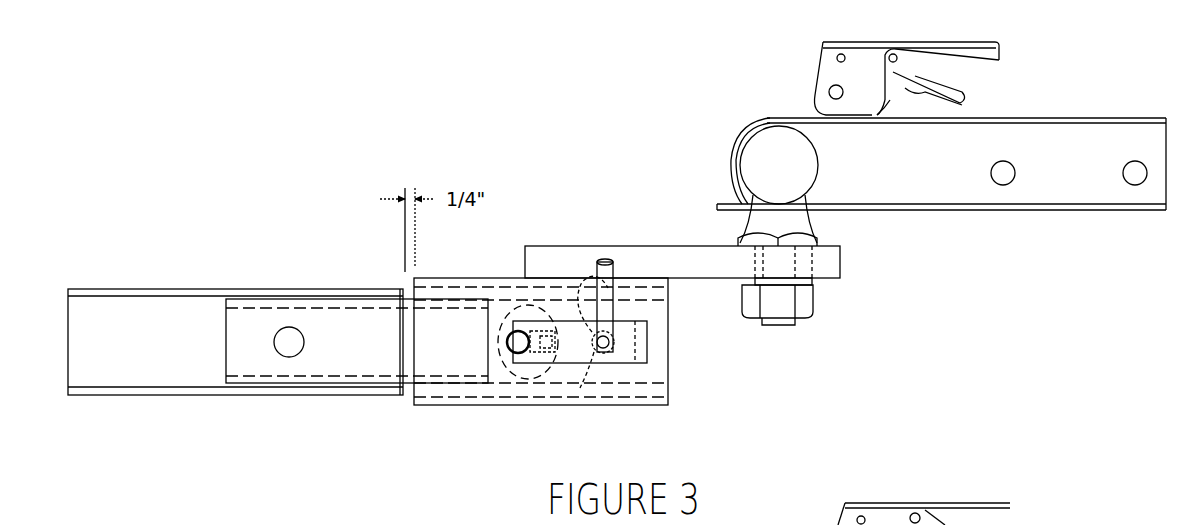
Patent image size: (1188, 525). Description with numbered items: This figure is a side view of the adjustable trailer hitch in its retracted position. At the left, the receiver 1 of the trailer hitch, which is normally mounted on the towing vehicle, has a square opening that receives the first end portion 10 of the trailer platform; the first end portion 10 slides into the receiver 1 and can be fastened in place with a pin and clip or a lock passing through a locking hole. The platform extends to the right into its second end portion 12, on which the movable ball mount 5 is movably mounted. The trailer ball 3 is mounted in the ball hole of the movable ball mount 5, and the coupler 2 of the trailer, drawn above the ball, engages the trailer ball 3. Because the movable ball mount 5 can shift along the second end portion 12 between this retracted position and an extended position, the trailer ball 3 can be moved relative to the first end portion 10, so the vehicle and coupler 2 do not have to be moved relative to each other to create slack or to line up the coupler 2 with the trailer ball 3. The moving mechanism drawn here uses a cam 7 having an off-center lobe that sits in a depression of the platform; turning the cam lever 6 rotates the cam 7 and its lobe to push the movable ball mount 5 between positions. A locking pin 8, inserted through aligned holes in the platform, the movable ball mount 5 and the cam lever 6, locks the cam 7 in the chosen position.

The receiver 1 is at (120, 290).
The coupler 2 is at (1062, 120).
The trailer ball 3 is at (738, 232).
The movable ball mount 5 is at (563, 246).
The cam lever 6 is at (572, 350).
The cam 7 is at (517, 350).
The locking pin 8 is at (613, 297).
The first end portion 10 is at (285, 387).
The second end portion 12 is at (413, 392).